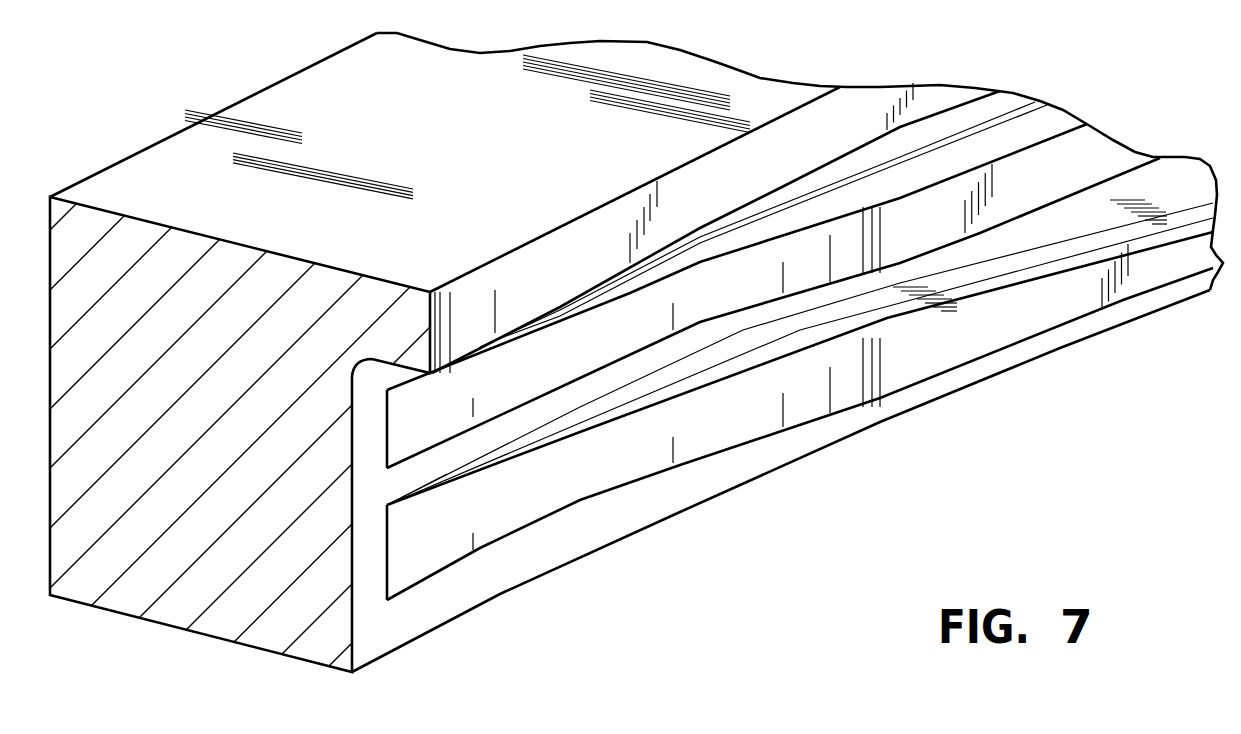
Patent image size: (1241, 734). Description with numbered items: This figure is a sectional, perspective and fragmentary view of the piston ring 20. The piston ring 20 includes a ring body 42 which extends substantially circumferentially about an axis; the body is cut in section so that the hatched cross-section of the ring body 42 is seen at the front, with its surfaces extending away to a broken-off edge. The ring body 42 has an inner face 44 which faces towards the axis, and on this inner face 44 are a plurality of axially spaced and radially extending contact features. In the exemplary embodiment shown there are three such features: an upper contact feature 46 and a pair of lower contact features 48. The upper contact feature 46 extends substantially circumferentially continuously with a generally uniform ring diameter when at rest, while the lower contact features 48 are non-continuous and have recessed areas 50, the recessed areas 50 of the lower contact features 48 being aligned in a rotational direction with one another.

The piston ring 20 is at (424, 66).
The ring body 42 is at (317, 98).
The inner face 44 is at (678, 178).
The upper contact feature 46 is at (818, 140).
The lower contact features 48 is at (972, 347).
The recessed areas 50 is at (407, 422).